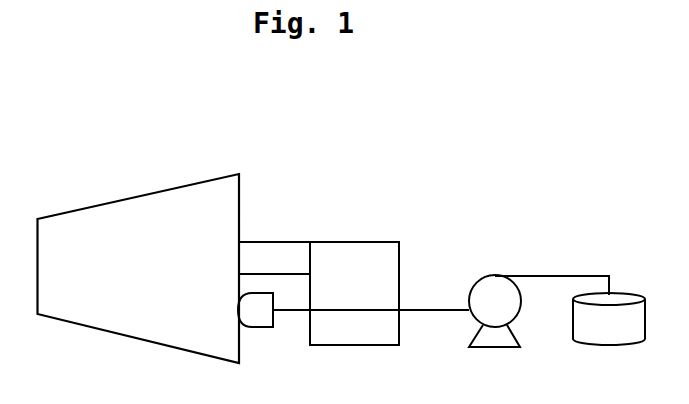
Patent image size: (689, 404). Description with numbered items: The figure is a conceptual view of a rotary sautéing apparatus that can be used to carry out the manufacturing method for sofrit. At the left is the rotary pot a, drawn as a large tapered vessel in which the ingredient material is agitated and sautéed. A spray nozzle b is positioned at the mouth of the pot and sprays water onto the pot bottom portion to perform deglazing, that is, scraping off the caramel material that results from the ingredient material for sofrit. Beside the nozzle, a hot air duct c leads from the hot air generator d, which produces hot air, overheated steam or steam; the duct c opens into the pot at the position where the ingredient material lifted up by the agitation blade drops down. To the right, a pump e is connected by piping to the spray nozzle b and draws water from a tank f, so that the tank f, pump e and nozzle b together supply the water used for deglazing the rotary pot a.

The rotary pot a is at (139, 268).
The spray nozzle b is at (257, 346).
The hot air duct c is at (274, 240).
The hot air generator d is at (354, 276).
The pump e is at (495, 337).
The tank f is at (609, 346).